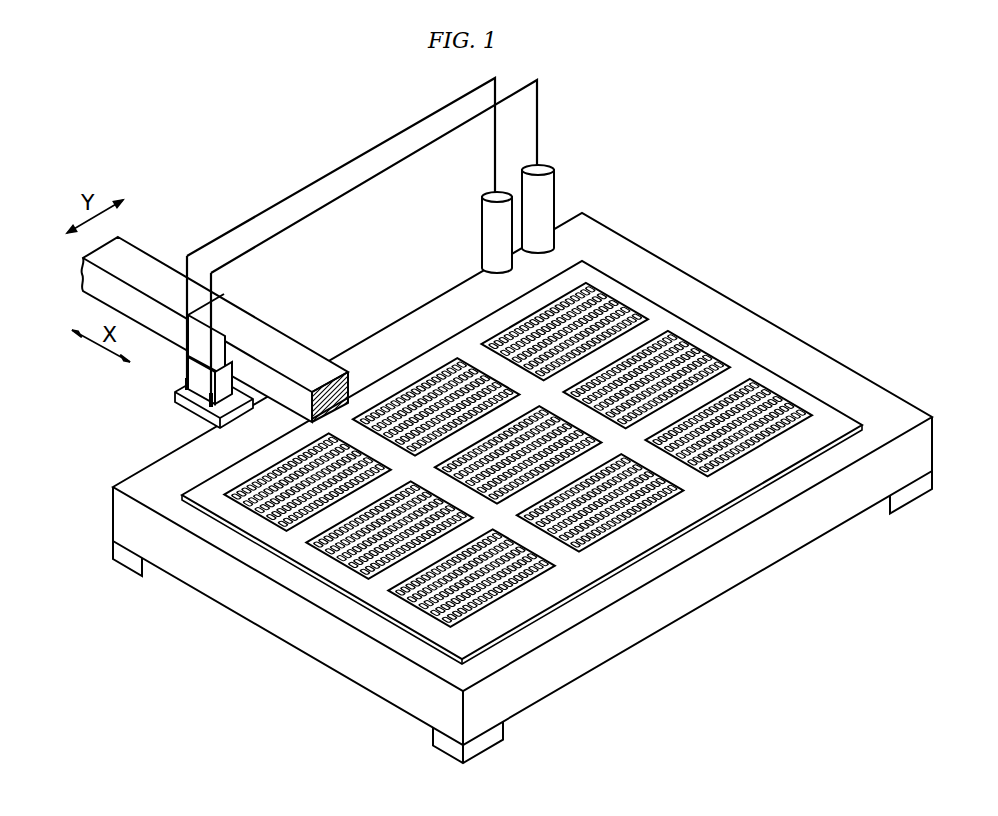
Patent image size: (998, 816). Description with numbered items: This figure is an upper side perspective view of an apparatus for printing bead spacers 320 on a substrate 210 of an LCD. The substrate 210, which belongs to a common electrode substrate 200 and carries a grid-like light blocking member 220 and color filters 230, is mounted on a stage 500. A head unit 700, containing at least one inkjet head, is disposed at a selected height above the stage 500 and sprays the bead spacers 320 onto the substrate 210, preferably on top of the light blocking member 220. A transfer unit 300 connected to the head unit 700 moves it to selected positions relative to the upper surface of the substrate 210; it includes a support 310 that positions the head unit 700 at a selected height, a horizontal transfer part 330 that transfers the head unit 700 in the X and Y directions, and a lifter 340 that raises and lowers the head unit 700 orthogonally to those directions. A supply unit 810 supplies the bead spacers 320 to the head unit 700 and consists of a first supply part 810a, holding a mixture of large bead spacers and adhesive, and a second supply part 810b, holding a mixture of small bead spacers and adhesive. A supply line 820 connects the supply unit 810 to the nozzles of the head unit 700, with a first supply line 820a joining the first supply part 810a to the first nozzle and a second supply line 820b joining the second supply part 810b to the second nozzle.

The common electrode substrate 200 is at (456, 466).
The substrate 210 is at (208, 500).
The light blocking member 220 is at (253, 508).
The color filters 230 is at (287, 518).
The transfer unit 300 is at (238, 331).
The support 310 is at (160, 280).
The bead spacers 320 is at (243, 490).
The horizontal transfer part 330 is at (232, 313).
The lifter 340 is at (231, 389).
The stage 500 is at (760, 316).
The head unit 700 is at (172, 393).
The supply unit 810 is at (580, 214).
The first supply part 810a is at (557, 178).
The second supply part 810b is at (500, 219).
The supply line 820 is at (362, 242).
The first supply line 820a is at (366, 153).
The second supply line 820b is at (343, 188).